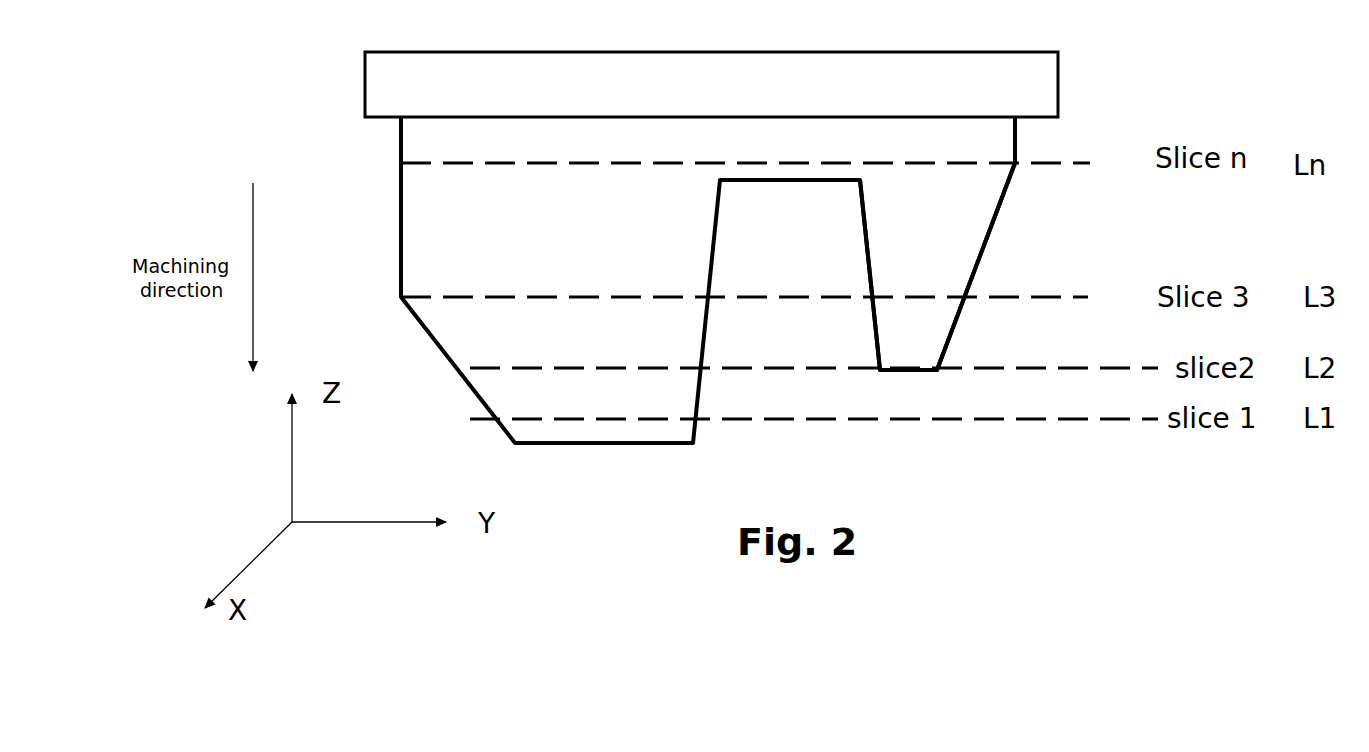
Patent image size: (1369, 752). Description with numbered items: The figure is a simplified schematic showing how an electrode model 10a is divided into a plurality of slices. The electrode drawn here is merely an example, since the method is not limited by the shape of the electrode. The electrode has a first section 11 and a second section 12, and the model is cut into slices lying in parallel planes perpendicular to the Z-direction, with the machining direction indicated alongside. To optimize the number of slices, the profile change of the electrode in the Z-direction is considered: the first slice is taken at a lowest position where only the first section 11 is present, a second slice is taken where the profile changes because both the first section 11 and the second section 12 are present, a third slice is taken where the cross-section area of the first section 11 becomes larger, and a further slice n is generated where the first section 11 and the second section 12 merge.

The electrode model 10a is at (328, 99).
The first section 11 is at (388, 214).
The second section 12 is at (991, 277).